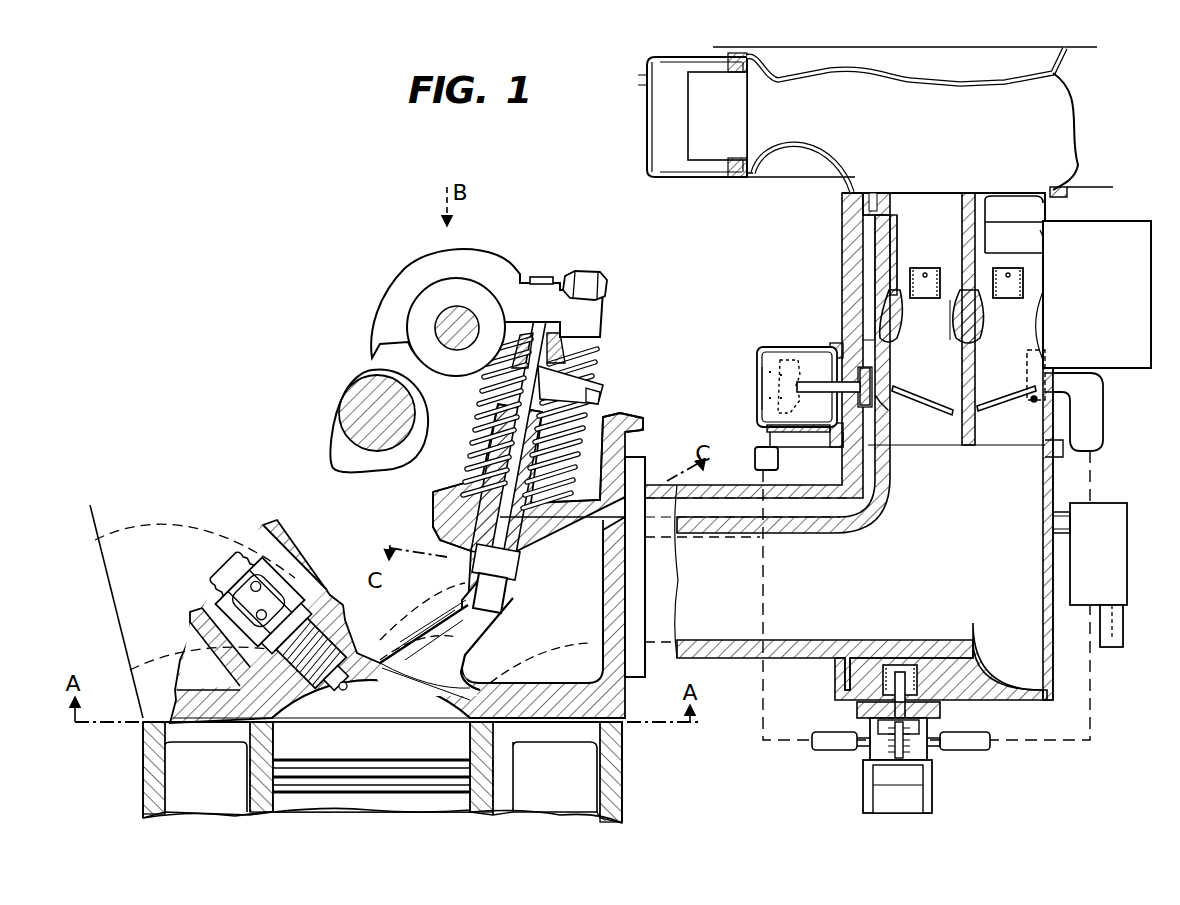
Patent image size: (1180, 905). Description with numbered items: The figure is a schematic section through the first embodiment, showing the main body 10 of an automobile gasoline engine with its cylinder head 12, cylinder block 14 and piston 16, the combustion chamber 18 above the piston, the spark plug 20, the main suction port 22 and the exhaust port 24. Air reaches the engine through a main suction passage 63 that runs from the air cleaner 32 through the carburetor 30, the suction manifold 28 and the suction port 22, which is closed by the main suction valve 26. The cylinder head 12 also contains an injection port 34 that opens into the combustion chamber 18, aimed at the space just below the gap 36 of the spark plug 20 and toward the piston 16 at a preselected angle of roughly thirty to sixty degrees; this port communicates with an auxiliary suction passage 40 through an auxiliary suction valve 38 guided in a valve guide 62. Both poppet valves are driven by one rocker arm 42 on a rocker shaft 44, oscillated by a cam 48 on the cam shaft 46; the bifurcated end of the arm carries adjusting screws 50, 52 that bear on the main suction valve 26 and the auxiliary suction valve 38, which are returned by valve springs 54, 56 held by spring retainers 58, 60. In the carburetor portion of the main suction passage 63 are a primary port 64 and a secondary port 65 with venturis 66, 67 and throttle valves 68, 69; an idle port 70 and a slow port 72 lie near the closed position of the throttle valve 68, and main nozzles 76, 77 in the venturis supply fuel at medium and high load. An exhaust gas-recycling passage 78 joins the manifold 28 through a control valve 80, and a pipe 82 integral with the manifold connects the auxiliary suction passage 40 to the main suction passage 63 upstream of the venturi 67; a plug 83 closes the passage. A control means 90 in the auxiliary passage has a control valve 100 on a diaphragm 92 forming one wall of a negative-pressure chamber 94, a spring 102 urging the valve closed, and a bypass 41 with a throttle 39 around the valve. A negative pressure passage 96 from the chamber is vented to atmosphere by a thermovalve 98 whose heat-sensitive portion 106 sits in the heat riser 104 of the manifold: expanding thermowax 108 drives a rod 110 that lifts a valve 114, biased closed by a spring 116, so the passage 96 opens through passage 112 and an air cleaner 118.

The main body of a gasoline engine 10 is at (282, 507).
The cylinder head 12 is at (613, 697).
The cylinder block 14 is at (615, 786).
The piston 16 is at (427, 756).
The combustion chamber 18 is at (383, 750).
The spark plug 20 is at (293, 600).
The main suction port 22 is at (585, 640).
The exhaust port 24 is at (187, 522).
The main suction valve 26 is at (567, 433).
The manifold 28 is at (727, 653).
The carburetor 30 is at (1075, 215).
The air cleaner 32 is at (968, 65).
The injection port 34 is at (440, 615).
The gap of the spark plug 36 is at (346, 689).
The auxiliary suction valve 38 is at (465, 478).
The throttle 39 is at (888, 407).
The auxiliary suction passage 40 is at (567, 555).
The bypass 41 is at (876, 384).
The rocker arm 42 is at (507, 263).
The rocker shaft 44 is at (459, 308).
The cam shaft 46 is at (358, 383).
The cam 48 is at (428, 400).
The adjusting screw 50 is at (593, 280).
The adjusting screw 52 is at (550, 276).
The valve spring 54 is at (601, 400).
The valve spring 56 is at (517, 362).
The spring retainer 58 is at (600, 380).
The spring retainer 60 is at (566, 328).
The valve guide 62 is at (476, 437).
The main suction passage 63 is at (952, 177).
The primary port 64 is at (990, 362).
The secondary port 65 is at (922, 362).
The venturi 66 is at (1008, 298).
The venturi 67 is at (922, 298).
The throttle valve 68 is at (993, 412).
The throttle valve 69 is at (952, 412).
The idle port 70 is at (1034, 402).
The slow port 72 is at (1030, 395).
The main nozzle 76 is at (1010, 272).
The main nozzle 77 is at (927, 272).
The exhaust gas-recycling passage 78 is at (1107, 632).
The control valve 80 is at (1100, 515).
The pipe 82 is at (790, 515).
The plug 83 is at (880, 193).
The control means 90 is at (760, 343).
The diaphragm 92 is at (803, 420).
The negative-pressure chamber 94 is at (770, 392).
The negative pressure passage 96 is at (766, 466).
The thermovalve 98 is at (935, 797).
The control valve 100 is at (810, 382).
The spring 102 is at (768, 402).
The heat riser 104 is at (979, 684).
The heat-sensitive portion 106 is at (918, 670).
The thermowax 108 is at (883, 670).
The rod 110 is at (910, 733).
The passage 112 is at (920, 770).
The valve 114 is at (872, 752).
The spring 116 is at (870, 727).
The air cleaner 118 is at (878, 796).